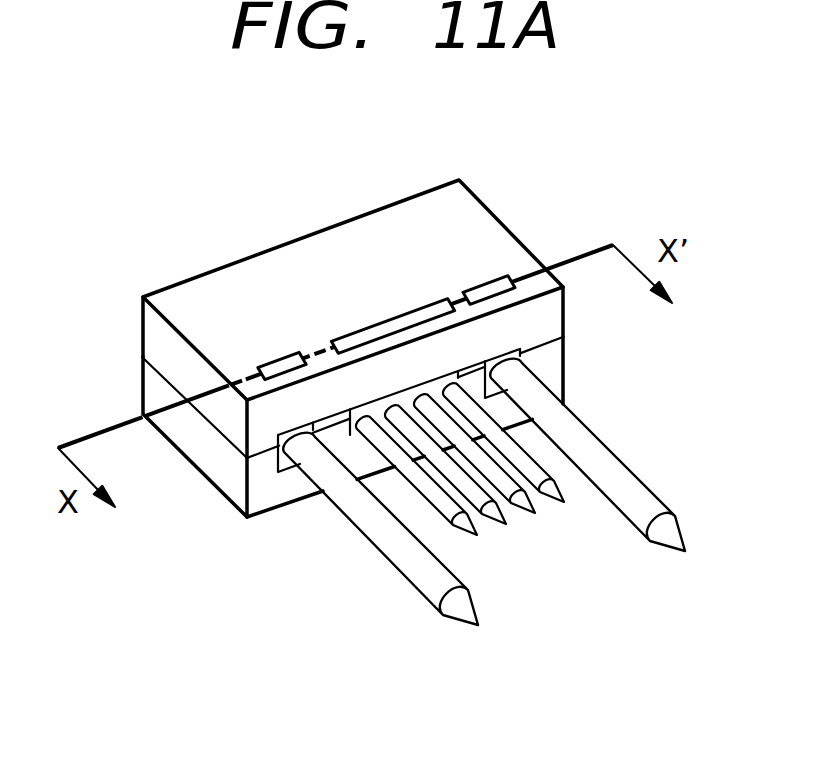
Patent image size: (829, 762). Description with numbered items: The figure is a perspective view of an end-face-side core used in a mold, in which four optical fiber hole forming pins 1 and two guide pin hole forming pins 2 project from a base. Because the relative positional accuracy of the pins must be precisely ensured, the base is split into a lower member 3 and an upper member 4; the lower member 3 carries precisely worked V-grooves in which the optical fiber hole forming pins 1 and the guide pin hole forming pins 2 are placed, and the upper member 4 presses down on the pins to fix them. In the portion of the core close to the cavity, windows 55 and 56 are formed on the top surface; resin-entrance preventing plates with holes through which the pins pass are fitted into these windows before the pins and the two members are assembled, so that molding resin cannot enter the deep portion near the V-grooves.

The optical fiber hole forming pins 1 is at (517, 453).
The guide pin hole forming pins 2 is at (627, 487).
The lower member 3 is at (220, 475).
The upper member 4 is at (160, 342).
The windows 55 is at (285, 357).
The window 56 is at (403, 315).